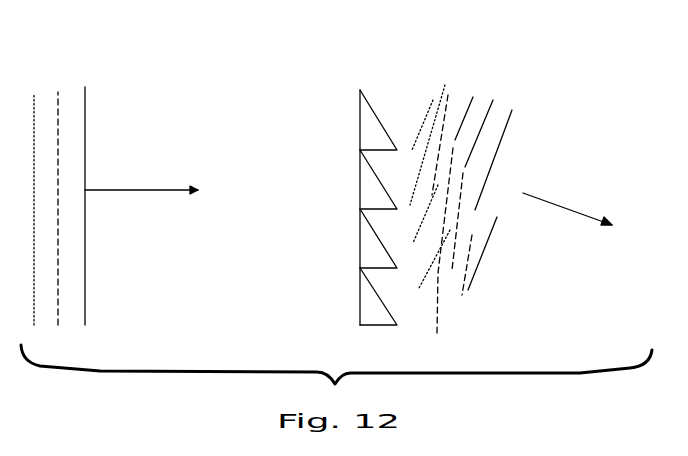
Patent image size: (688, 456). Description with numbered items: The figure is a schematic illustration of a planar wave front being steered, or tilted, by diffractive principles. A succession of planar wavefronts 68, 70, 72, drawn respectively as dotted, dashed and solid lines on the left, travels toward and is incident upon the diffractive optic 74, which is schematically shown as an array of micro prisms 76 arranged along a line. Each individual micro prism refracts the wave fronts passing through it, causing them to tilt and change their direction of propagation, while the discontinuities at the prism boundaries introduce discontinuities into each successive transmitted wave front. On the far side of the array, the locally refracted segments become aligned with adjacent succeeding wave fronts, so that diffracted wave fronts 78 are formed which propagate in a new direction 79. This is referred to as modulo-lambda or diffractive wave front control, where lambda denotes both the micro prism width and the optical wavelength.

The planar wavefront 68 is at (35, 93).
The planar wavefront 70 is at (60, 92).
The planar wavefront 72 is at (86, 115).
The diffractive optic 74 is at (332, 86).
The array of micro prisms 76 is at (373, 110).
The diffracted wave fronts 78 is at (518, 136).
The new direction 79 is at (576, 212).